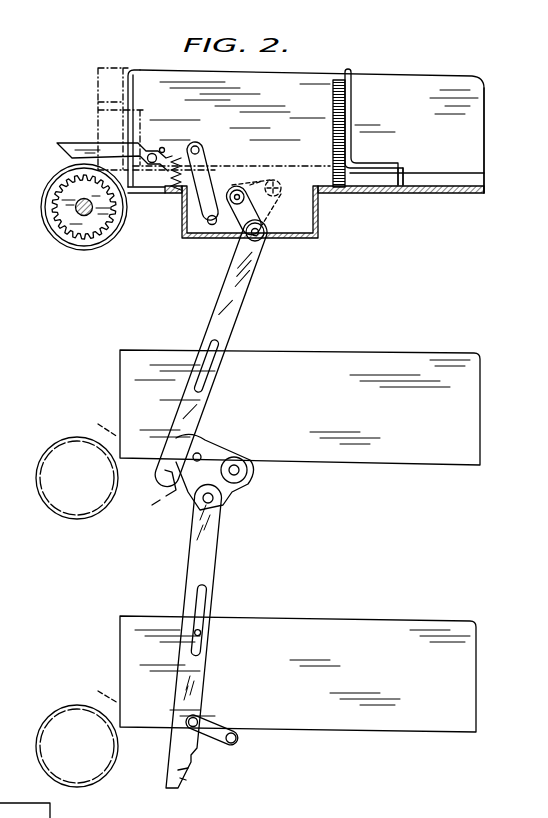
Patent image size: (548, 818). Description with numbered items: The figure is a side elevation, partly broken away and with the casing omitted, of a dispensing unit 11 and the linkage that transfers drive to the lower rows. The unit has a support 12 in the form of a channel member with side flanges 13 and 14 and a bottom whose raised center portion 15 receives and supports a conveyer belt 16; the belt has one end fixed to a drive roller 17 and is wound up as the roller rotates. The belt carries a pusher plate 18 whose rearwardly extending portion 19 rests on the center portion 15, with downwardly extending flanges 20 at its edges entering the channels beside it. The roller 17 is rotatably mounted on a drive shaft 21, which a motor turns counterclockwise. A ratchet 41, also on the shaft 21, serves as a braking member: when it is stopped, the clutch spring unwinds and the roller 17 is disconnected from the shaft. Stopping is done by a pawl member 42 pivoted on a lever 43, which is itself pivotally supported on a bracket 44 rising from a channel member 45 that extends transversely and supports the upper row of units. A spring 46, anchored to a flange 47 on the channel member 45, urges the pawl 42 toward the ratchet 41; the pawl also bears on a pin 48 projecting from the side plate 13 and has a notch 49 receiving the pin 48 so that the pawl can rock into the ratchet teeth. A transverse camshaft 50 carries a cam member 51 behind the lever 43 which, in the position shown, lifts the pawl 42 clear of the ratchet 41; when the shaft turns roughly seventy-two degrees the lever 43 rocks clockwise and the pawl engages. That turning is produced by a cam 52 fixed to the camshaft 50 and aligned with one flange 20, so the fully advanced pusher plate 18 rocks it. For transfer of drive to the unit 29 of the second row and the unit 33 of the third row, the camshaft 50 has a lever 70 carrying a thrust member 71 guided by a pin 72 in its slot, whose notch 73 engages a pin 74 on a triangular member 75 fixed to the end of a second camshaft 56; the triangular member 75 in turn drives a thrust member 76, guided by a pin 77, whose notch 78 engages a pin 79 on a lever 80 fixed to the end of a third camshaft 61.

The dispensing unit 11 is at (82, 119).
The support 12 is at (476, 186).
The side flange 13 is at (302, 82).
The side flange 14 is at (478, 92).
The raised center portion 15 is at (428, 174).
The conveyer belt 16 is at (131, 188).
The drive roller 17 is at (70, 241).
The pusher plate 18 is at (349, 109).
The rearwardly extending portion 19 is at (372, 165).
The downwardly extending flange 20 is at (405, 188).
The drive shaft 21 is at (76, 214).
The dispensing unit 29 is at (489, 395).
The dispensing unit 33 is at (485, 637).
The ratchet 41 is at (53, 212).
The pawl member 42 is at (85, 143).
The lever 43 is at (206, 169).
The bracket 44 is at (219, 238).
The channel member 45 is at (182, 231).
The spring 46 is at (179, 167).
The flange 47 is at (173, 191).
The pin 48 is at (163, 147).
The notch 49 is at (152, 153).
The camshaft 50 is at (244, 188).
The cam member 51 is at (226, 188).
The cam 52 is at (259, 162).
The camshaft 56 is at (240, 470).
The camshaft 61 is at (232, 741).
The lever 70 is at (263, 214).
The thrust member 71 is at (246, 372).
The pin 72 is at (252, 361).
The notch 73 is at (160, 480).
The pin 74 is at (202, 455).
The triangular member 75 is at (230, 490).
The thrust member 76 is at (211, 646).
The pin 77 is at (199, 634).
The notch 78 is at (183, 760).
The pin 79 is at (197, 716).
The lever 80 is at (223, 726).